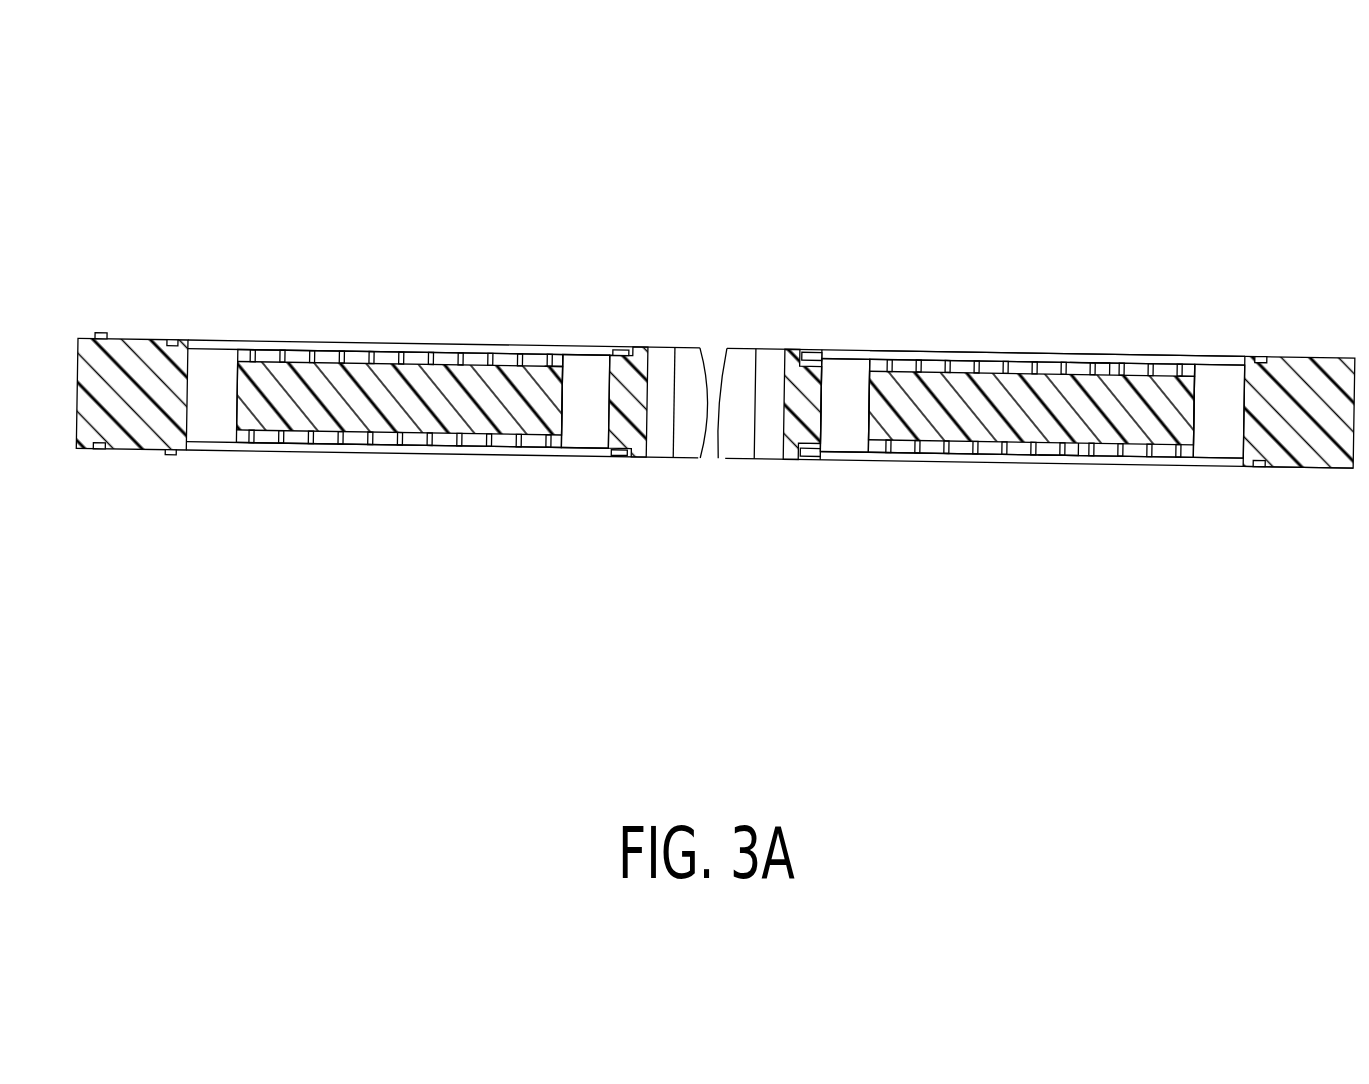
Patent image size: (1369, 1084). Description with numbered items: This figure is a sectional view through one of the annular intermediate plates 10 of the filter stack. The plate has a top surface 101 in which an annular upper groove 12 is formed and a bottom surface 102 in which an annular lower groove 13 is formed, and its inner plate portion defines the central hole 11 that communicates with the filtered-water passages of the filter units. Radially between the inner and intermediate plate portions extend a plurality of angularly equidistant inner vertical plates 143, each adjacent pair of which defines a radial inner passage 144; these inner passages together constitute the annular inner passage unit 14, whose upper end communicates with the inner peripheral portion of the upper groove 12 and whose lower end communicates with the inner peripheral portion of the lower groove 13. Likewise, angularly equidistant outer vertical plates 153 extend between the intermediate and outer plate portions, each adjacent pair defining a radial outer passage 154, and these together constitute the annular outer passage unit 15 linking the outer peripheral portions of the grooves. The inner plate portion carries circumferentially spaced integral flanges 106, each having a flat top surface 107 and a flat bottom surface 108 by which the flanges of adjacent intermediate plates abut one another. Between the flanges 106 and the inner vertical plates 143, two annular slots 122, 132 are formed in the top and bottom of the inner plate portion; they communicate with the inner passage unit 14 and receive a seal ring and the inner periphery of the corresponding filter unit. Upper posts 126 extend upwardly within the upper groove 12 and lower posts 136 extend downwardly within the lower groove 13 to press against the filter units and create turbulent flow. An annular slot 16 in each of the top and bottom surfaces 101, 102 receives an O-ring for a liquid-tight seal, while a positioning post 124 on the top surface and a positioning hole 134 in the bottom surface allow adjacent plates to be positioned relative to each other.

The intermediate plate 10 is at (122, 463).
The central hole 11 is at (700, 368).
The annular upper groove 12 is at (947, 356).
The annular lower groove 13 is at (930, 452).
The annular inner passage unit 14 is at (587, 434).
The radial inner passage 144 is at (585, 402).
The inner vertical plate 143 is at (570, 349).
The annular outer passage unit 15 is at (1214, 436).
The radial outer passage 154 is at (1218, 411).
The outer vertical plate 153 is at (1220, 366).
The annular slot 16 is at (172, 338).
The top surface 101 is at (1338, 357).
The bottom surface 102 is at (1352, 468).
The flange 106 is at (650, 398).
The top surface of flange 107 is at (630, 349).
The bottom surface of flange 108 is at (645, 458).
The annular slot 122 is at (826, 367).
The positioning post 124 is at (100, 332).
The upper post 126 is at (1090, 364).
The annular slot 132 is at (826, 436).
The positioning hole 134 is at (100, 448).
The lower post 136 is at (1062, 445).